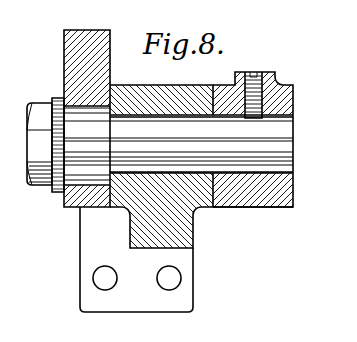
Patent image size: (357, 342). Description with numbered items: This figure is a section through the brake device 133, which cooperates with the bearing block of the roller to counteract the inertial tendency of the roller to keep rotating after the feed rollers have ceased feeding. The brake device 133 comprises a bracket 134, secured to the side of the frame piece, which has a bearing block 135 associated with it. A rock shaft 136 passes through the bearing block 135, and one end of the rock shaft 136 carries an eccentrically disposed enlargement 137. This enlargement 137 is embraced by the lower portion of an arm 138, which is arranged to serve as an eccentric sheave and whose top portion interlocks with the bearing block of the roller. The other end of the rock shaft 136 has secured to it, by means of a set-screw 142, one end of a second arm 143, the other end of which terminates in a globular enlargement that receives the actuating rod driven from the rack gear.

The brake device 133 is at (201, 210).
The bracket 134 is at (193, 298).
The bearing block 135 is at (178, 90).
The rock shaft 136 is at (293, 147).
The eccentrically disposed enlargement 137 is at (76, 106).
The arm 138 is at (110, 63).
The set-screw 142 is at (255, 72).
The arm 143 is at (293, 206).